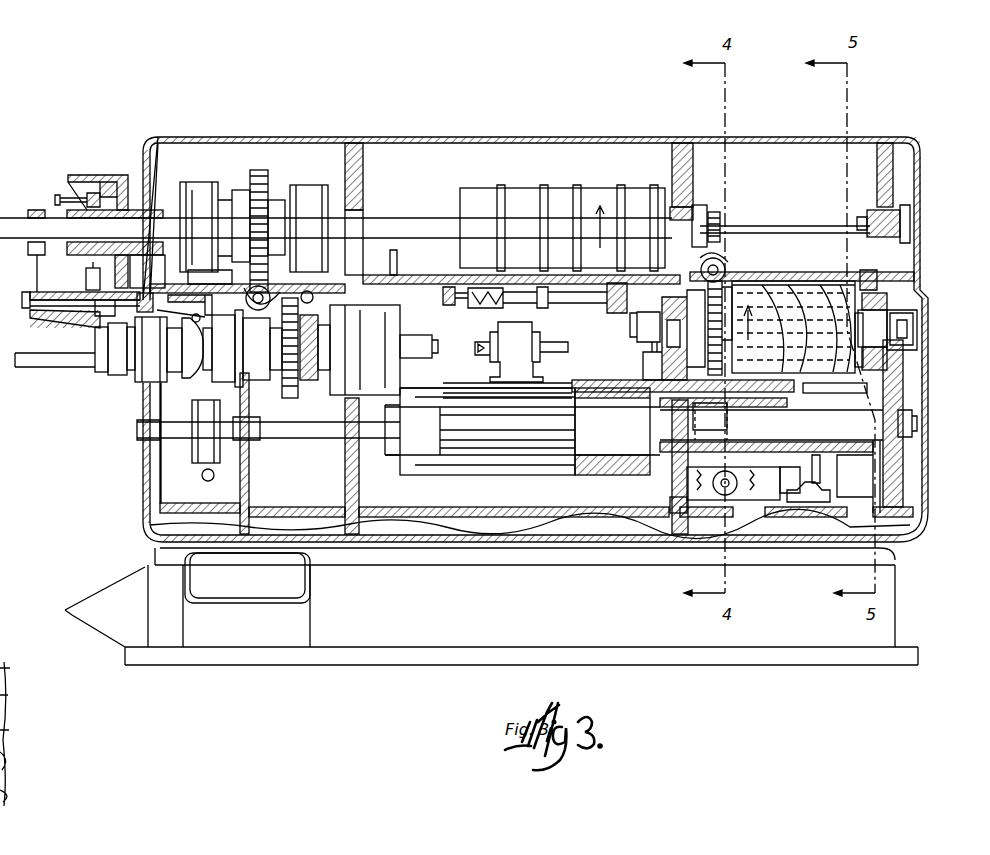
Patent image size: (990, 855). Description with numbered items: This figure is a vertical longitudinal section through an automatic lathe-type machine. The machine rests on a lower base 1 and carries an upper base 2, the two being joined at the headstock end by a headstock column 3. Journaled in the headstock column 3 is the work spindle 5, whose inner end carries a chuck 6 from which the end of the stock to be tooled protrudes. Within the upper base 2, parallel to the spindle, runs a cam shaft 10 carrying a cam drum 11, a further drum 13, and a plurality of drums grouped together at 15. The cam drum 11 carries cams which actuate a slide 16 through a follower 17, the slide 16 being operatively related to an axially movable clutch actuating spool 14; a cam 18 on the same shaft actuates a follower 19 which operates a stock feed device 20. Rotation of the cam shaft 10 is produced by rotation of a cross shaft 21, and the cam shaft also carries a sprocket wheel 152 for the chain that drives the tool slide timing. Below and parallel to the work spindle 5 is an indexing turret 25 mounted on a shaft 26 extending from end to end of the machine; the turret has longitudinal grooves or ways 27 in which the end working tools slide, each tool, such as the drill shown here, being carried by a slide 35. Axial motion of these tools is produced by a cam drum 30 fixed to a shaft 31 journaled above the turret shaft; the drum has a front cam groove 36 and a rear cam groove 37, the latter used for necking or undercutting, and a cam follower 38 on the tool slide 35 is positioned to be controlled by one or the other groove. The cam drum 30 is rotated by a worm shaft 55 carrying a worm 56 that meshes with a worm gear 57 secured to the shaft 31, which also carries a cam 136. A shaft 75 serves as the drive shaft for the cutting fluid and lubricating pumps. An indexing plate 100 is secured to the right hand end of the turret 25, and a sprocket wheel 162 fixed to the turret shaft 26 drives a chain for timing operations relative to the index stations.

The lower base 1 is at (405, 628).
The upper base 2 is at (520, 137).
The headstock column 3 is at (226, 355).
The work spindle 5 is at (417, 345).
The chuck 6 is at (386, 336).
The cam shaft 10 is at (432, 220).
The cam drum 11 is at (190, 185).
The pulley 13 is at (310, 190).
The clutch actuating spool 14 is at (192, 366).
The plurality of drums 15 is at (565, 190).
The slide 16 is at (206, 280).
The follower 17 is at (192, 262).
The cam 18 is at (106, 176).
The follower 19 is at (86, 282).
The stock feed device 20 is at (95, 366).
The cross shaft 21 is at (268, 290).
The indexing turret 25 is at (560, 472).
The shaft 26 is at (632, 435).
The longitudinal grooves or ways 27 is at (510, 415).
The cam drum 30 is at (803, 285).
The shaft 31 is at (903, 300).
The slide 35 is at (578, 385).
The cam groove 36 is at (762, 280).
The cam groove 37 is at (820, 312).
The cam follower 38 is at (775, 375).
The worm shaft 55 is at (700, 208).
The worm 56 is at (718, 257).
The worm gear 57 is at (712, 305).
The shaft 75 is at (740, 484).
The indexing plate 100 is at (905, 492).
The cam 136 is at (858, 328).
The sprocket wheel 152 is at (905, 210).
The sprocket wheel 162 is at (913, 413).